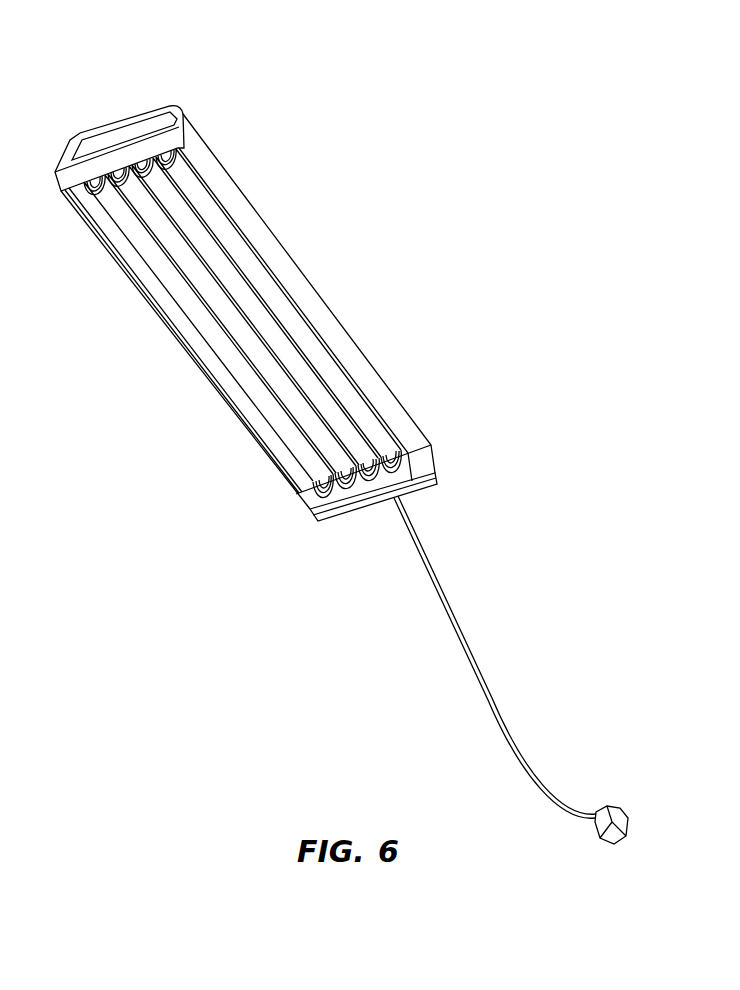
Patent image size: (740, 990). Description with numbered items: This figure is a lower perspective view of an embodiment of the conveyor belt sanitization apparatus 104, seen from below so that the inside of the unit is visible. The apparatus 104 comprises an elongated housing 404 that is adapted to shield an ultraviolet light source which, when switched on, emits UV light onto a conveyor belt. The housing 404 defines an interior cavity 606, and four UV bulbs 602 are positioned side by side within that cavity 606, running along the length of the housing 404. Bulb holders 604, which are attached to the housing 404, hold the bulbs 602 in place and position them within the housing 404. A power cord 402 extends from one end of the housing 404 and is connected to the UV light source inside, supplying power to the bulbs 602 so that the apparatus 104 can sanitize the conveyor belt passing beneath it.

The apparatus 104 is at (54, 104).
The housing 404 is at (380, 384).
The power cord 402 is at (492, 707).
The UV bulbs 602 is at (247, 395).
The bulb holders 604 is at (312, 517).
The interior cavity 606 is at (207, 379).